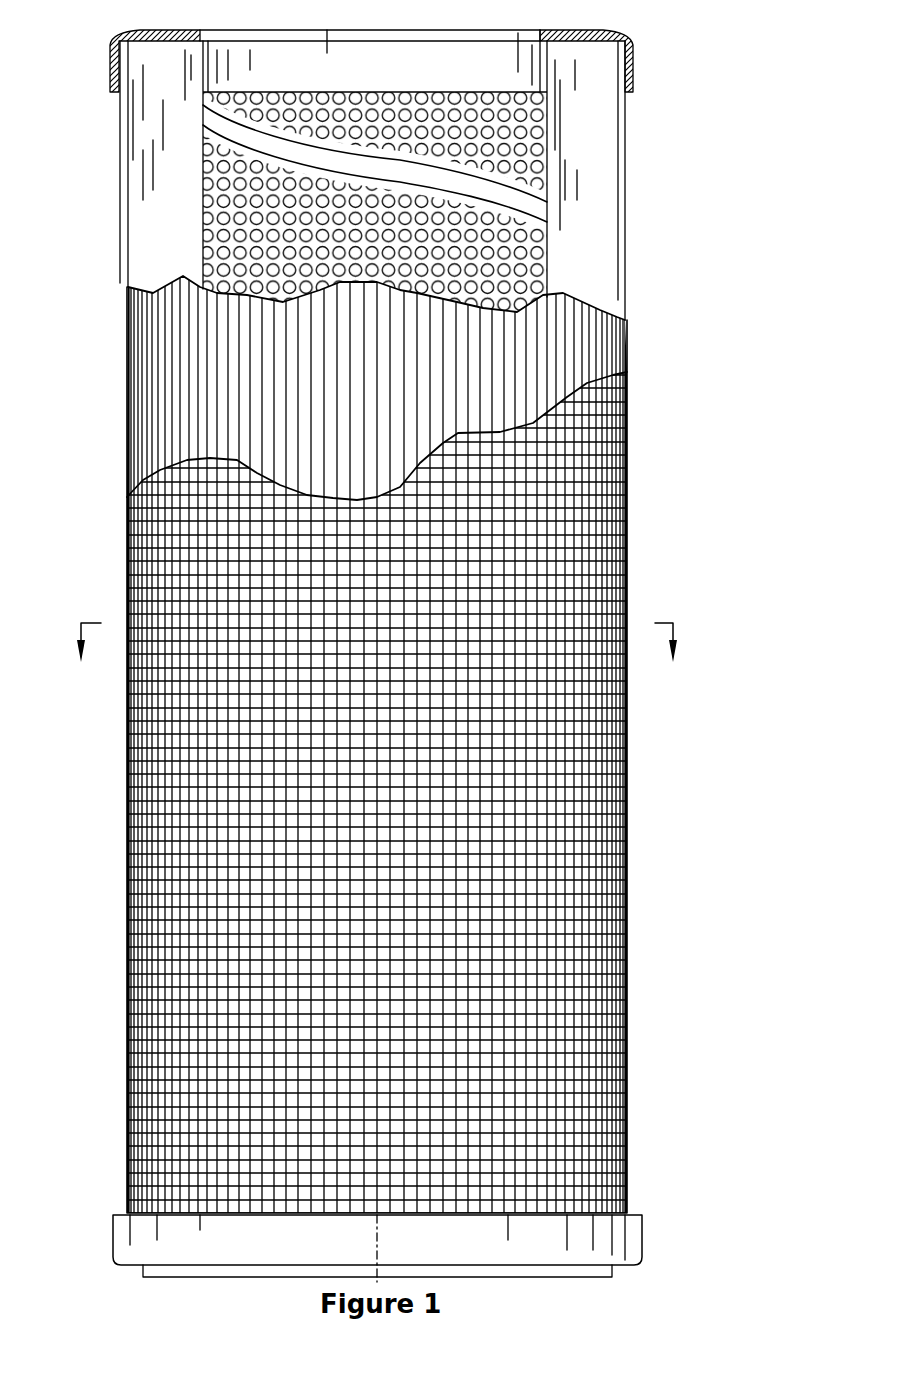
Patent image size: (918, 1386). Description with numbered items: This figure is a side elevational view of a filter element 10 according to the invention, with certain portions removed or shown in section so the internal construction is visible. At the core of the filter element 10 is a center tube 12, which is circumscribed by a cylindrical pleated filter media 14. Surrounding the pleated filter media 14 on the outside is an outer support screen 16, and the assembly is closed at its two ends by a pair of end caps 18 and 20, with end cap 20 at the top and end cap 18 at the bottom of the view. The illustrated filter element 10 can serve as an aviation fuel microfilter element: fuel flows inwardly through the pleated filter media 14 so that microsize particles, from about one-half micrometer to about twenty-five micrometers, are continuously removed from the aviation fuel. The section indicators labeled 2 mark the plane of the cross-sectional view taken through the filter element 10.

The filter element 10 is at (676, 501).
The center tube 12 is at (487, 110).
The pleated filter media 14 is at (656, 333).
The outer support screen 16 is at (587, 442).
The end cap 18 is at (603, 1237).
The end cap 20 is at (576, 43).
The section line 2- 2 is at (377, 657).